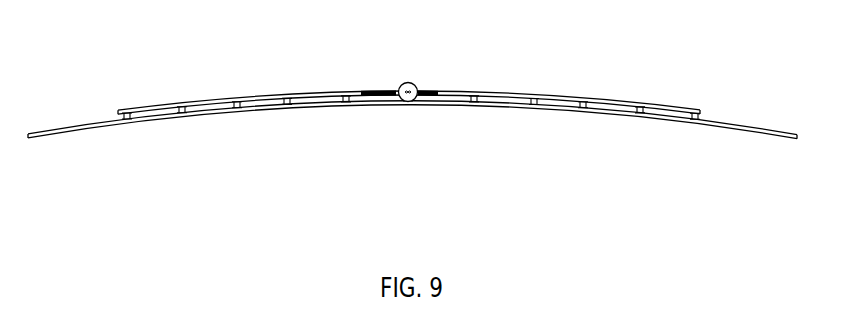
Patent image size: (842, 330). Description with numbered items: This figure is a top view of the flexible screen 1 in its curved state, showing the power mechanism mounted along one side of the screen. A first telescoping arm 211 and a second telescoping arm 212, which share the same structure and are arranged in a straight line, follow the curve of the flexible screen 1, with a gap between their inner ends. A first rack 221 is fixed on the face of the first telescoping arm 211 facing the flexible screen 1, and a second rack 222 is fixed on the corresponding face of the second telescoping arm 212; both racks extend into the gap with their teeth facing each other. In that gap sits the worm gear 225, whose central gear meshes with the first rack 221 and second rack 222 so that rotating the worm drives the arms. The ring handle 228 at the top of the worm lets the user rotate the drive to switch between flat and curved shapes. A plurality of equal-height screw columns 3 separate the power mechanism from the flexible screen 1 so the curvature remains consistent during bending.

The flexible screen 1 is at (412, 86).
The screw columns 3 is at (409, 67).
The first telescoping arm 211 is at (264, 67).
The second telescoping arm 212 is at (555, 71).
The first rack 221 is at (397, 56).
The second rack 222 is at (471, 56).
The worm gear 225 is at (411, 162).
The ring handle 228 is at (441, 131).